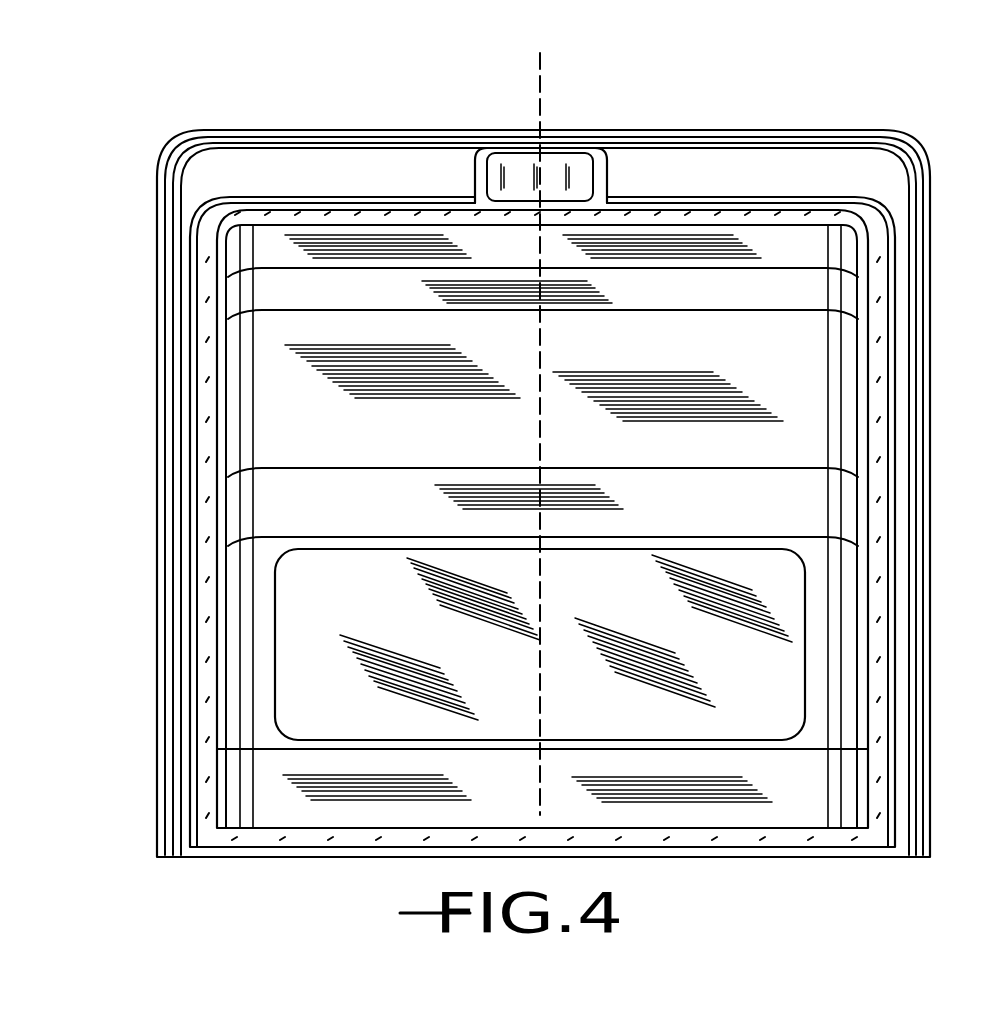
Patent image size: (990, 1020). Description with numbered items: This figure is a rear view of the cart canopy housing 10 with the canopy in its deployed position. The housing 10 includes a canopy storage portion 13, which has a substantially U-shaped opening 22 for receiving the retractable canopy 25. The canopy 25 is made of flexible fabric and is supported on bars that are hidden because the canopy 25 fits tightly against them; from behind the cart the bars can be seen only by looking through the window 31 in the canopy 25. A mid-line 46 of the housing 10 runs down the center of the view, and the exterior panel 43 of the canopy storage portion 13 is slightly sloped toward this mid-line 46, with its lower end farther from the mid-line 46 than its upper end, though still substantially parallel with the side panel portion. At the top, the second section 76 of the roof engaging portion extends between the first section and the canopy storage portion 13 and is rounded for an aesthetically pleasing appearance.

The cart canopy housing 10 is at (855, 86).
The canopy storage portion 13 is at (757, 198).
The opening 22 is at (213, 247).
The retractable canopy 25 is at (752, 363).
The window 31 is at (355, 611).
The exterior panel 43 is at (193, 487).
The mid-line 46 is at (545, 92).
The second section 76 is at (360, 186).